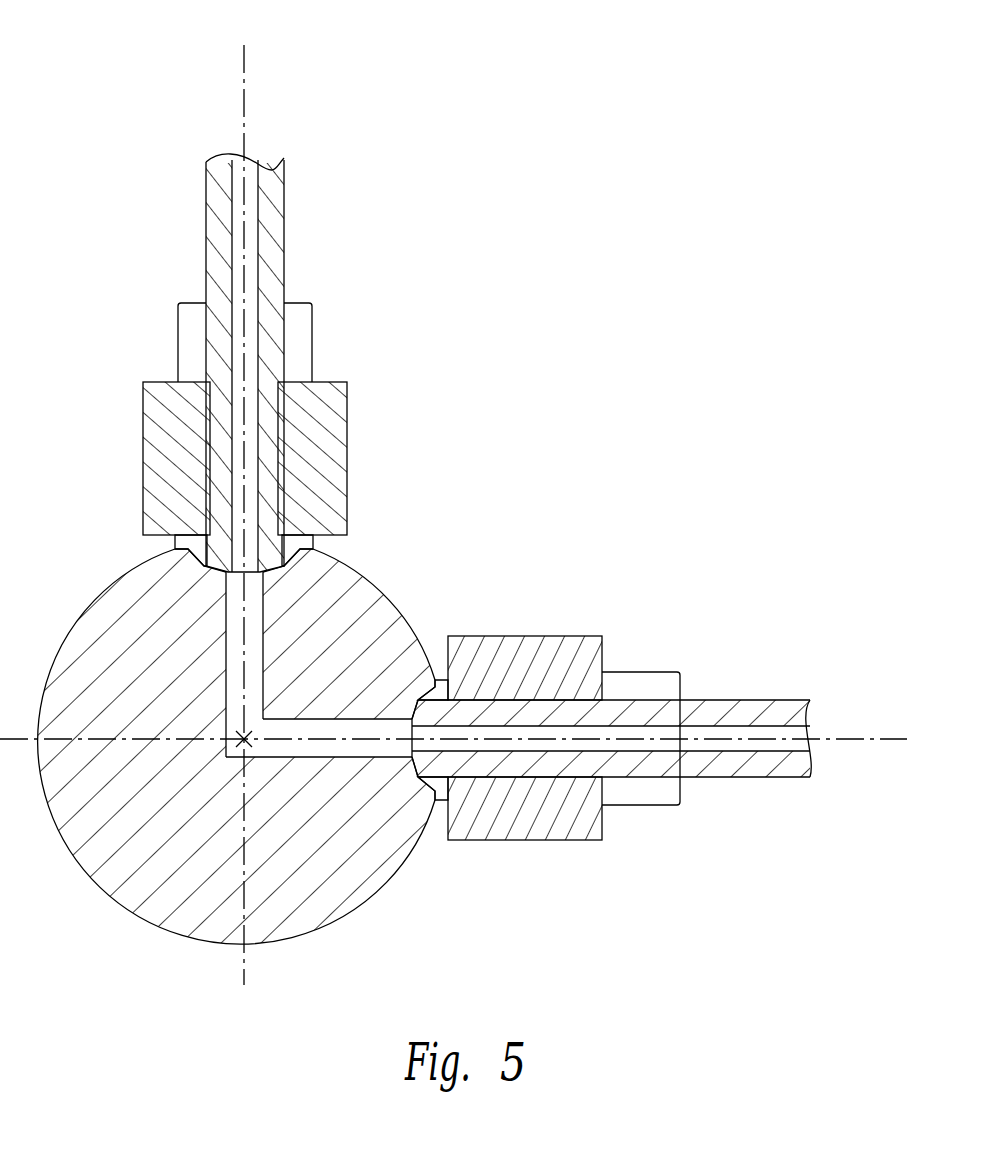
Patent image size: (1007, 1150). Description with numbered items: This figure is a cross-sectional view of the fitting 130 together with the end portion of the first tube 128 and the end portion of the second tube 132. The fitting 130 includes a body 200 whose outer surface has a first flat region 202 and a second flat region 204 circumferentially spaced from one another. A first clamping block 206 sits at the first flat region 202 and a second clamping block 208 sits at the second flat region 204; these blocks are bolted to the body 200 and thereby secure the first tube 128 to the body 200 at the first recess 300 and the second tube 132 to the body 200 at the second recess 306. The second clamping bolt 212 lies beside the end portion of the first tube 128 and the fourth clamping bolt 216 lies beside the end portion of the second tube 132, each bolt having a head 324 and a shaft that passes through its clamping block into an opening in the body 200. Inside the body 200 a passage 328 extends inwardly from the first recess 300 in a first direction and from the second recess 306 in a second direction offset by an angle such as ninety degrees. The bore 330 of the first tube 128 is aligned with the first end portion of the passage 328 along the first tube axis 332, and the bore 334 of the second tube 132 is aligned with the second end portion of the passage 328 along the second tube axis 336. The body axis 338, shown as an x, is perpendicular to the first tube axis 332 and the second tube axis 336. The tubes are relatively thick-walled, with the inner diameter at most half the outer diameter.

The first tube 128 is at (316, 345).
The fitting 130 is at (659, 381).
The second tube 132 is at (661, 699).
The body 200 is at (244, 757).
The first flat region 202 is at (230, 520).
The second flat region 204 is at (443, 803).
The first clamping block 206 is at (336, 425).
The second clamping block 208 is at (543, 647).
The second clamping bolt 212 is at (305, 343).
The fourth clamping bolt 216 is at (645, 682).
The first recess 300 is at (297, 548).
The second recess 306 is at (445, 682).
The head 324 is at (469, 554).
The passage 328 is at (256, 637).
The bore 330 is at (251, 176).
The first tube axis 332 is at (245, 95).
The bore 334 is at (772, 733).
The second tube axis 336 is at (873, 742).
The body axis 338 is at (244, 735).